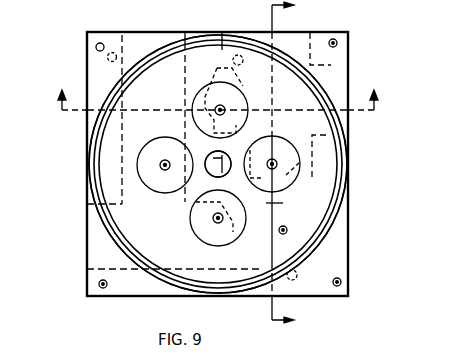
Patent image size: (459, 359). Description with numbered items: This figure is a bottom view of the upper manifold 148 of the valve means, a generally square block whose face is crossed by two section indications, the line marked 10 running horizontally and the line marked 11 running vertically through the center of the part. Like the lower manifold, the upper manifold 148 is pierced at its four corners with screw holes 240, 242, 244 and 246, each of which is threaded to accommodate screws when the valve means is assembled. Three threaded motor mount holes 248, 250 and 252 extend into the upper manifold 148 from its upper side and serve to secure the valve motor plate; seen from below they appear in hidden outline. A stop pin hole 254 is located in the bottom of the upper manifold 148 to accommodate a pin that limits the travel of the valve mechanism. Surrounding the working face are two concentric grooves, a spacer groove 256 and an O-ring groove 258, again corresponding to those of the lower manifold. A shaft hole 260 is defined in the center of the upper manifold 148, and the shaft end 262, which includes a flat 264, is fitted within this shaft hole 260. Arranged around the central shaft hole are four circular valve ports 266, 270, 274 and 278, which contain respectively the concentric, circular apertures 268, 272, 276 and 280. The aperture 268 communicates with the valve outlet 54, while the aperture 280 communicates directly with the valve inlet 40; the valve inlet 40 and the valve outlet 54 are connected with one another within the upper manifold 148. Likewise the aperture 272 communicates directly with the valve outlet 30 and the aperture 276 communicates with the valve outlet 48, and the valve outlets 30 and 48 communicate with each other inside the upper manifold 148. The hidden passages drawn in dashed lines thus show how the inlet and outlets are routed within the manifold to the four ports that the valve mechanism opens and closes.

The section line 10- 10 is at (219, 91).
The section line 11- 11 is at (294, 164).
The valve outlet 30 is at (166, 32).
The valve inlet 40 is at (244, 53).
The valve outlet 48 is at (101, 268).
The valve outlet 54 is at (331, 67).
The upper manifold 148 is at (96, 221).
The screw hole 240 is at (103, 43).
The screw hole 242 is at (338, 43).
The screw hole 244 is at (103, 289).
The screw hole 246 is at (342, 281).
The motor mount hole 248 is at (108, 58).
The motor mount hole 250 is at (220, 36).
The motor mount hole 252 is at (298, 274).
The stop pin hole 254 is at (287, 230).
The spacer groove 256 is at (330, 210).
The O-ring groove 258 is at (347, 176).
The shaft hole 260 is at (214, 174).
The shaft end 262 is at (208, 155).
The flat 264 is at (289, 204).
The valve port 266 is at (211, 93).
The aperture 268 is at (224, 106).
The valve port 270 is at (170, 183).
The aperture 272 is at (161, 166).
The valve port 274 is at (230, 239).
The aperture 276 is at (215, 221).
The valve port 278 is at (286, 178).
The aperture 280 is at (273, 158).